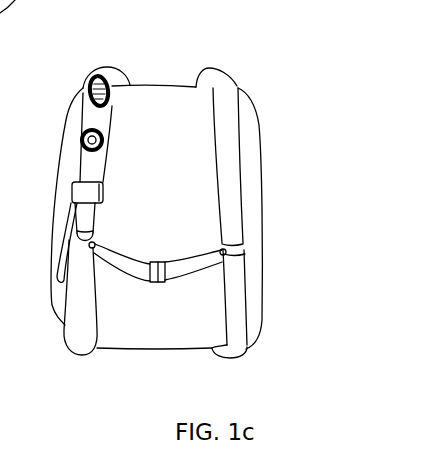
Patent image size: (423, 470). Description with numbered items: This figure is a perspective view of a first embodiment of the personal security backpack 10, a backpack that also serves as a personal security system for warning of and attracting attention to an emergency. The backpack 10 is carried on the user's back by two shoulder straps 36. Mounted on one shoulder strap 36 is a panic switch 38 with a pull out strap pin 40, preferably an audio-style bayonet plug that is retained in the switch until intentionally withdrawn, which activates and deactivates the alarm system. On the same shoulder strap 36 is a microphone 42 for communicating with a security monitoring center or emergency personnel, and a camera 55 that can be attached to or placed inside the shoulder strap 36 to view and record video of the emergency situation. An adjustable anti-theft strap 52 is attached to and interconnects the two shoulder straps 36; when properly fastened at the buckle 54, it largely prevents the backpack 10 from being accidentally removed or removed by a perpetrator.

The personal security backpack 10 is at (316, 109).
The shoulder strap 36 is at (113, 70).
The panic switch 38 is at (62, 193).
The pull out strap pin 40 is at (61, 258).
The microphone 42 is at (89, 88).
The adjustable anti-theft strap 52 is at (187, 282).
The buckle 54 is at (153, 283).
The camera 55 is at (104, 139).